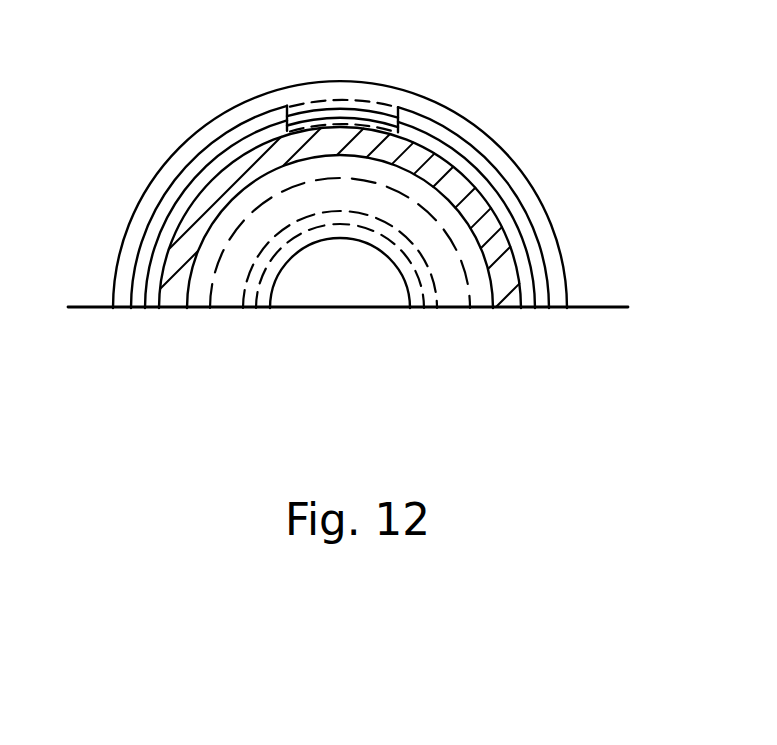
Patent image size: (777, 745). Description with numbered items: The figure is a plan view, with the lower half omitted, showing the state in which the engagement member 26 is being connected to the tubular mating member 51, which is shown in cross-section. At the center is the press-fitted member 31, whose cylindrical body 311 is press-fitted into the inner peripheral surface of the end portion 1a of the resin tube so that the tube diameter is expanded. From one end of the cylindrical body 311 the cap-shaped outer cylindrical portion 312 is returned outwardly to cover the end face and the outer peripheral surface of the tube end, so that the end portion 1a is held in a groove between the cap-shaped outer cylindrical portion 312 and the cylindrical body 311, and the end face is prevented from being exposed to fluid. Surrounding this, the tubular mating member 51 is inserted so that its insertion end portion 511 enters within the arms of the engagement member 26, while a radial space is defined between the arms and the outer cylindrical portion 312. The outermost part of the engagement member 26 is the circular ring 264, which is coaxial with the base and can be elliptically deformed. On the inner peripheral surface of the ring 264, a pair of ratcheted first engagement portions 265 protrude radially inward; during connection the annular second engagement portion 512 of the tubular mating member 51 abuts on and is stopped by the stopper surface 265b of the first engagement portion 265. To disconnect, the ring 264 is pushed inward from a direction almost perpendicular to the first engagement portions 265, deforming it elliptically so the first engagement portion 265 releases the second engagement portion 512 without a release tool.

The end portion of the resin tube 1a is at (233, 265).
The engagement member 26 is at (502, 145).
The circular ring 264 is at (530, 205).
The ratcheted first engagement portion 265 is at (355, 113).
The stopper surface 265b is at (309, 100).
The press-fitted member 31 is at (330, 238).
The cylindrical body 311 is at (422, 290).
The cap-shaped outer cylindrical portion 312 is at (482, 283).
The tubular mating member 51 is at (430, 148).
The insertion end portion 511 is at (505, 268).
The second engagement portion 512 is at (238, 150).